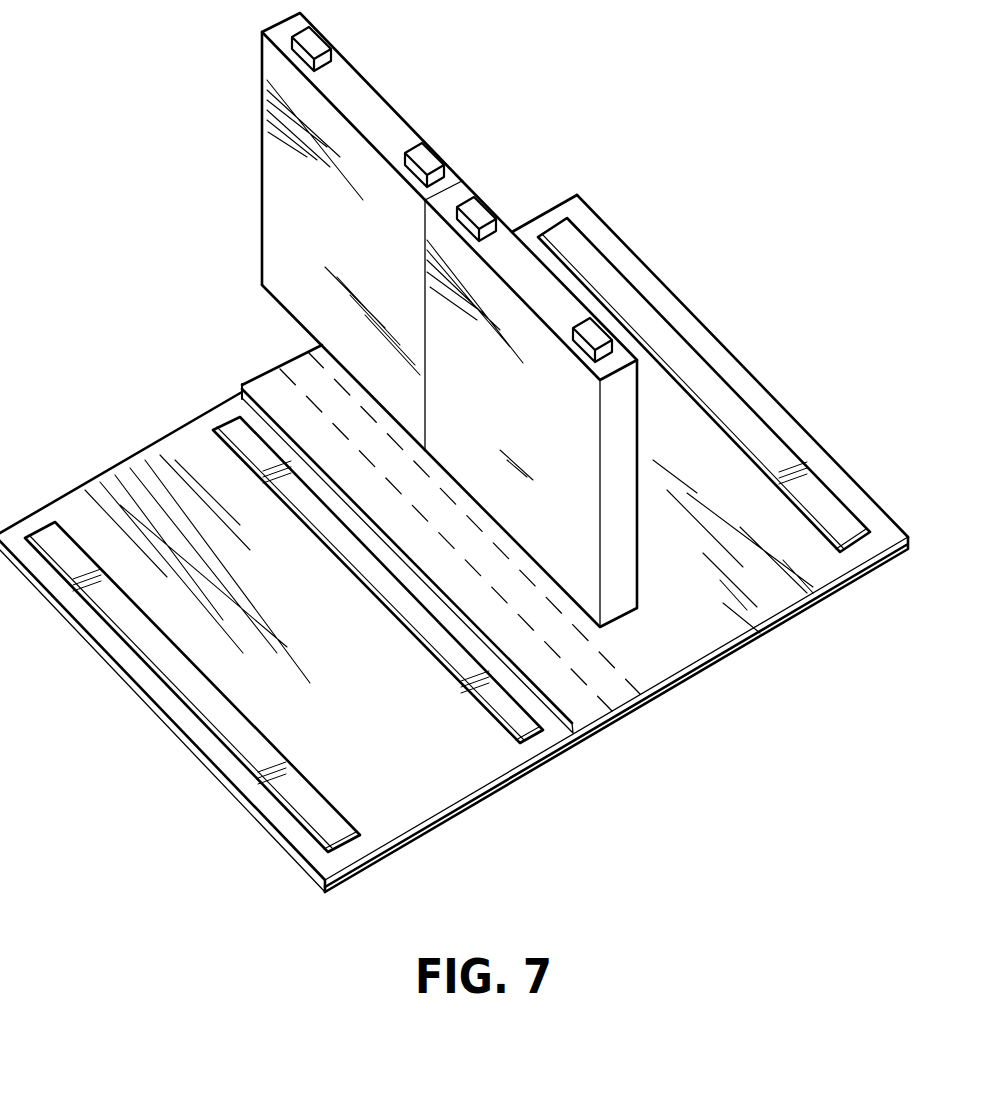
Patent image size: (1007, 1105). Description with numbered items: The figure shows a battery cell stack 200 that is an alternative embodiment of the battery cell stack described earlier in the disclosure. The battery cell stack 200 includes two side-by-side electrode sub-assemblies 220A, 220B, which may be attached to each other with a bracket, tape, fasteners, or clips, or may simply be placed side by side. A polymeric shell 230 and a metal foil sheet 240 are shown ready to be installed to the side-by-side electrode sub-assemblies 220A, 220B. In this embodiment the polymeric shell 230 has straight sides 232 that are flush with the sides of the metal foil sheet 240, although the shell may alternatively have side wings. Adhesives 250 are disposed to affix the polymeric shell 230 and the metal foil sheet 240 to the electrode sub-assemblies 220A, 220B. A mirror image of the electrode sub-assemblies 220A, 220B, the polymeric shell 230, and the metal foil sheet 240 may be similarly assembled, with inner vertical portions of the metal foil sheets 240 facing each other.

The battery cell stack 200 is at (150, 110).
The electrode sub-assembly 220A is at (281, 215).
The electrode sub-assembly 220B is at (620, 562).
The polymeric shell 230 is at (723, 602).
The straight sides 232 is at (290, 360).
The metal foil sheet 240 is at (178, 465).
The adhesives 250 is at (508, 715).